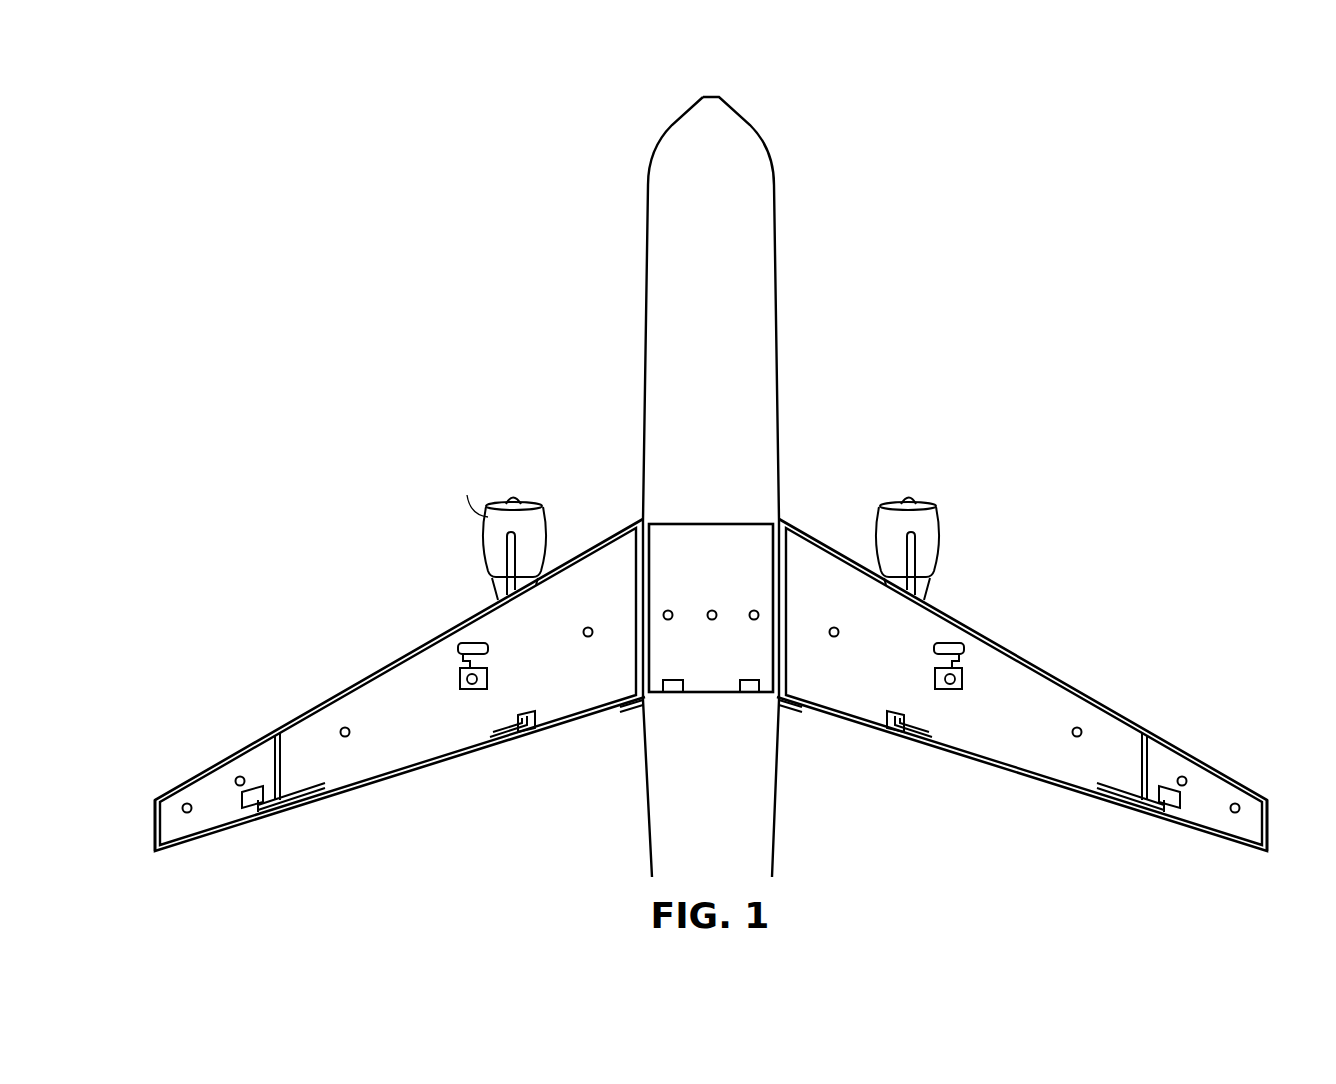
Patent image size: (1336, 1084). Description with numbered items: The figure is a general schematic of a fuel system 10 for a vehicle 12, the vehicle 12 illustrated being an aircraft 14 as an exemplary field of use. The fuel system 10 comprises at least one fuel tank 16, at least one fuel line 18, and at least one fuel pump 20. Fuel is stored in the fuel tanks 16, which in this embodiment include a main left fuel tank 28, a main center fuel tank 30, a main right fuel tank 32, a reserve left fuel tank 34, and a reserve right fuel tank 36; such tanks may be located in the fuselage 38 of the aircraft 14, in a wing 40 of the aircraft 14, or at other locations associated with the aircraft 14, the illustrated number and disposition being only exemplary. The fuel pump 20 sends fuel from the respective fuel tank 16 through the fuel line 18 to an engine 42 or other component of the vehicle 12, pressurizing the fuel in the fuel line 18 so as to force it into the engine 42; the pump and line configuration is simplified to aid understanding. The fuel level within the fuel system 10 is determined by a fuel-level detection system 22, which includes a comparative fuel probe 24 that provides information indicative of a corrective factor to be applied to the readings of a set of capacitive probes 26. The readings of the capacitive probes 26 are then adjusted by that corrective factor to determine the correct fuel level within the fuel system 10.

The fuel system 10 is at (448, 599).
The vehicle 12 is at (216, 171).
The aircraft 14 is at (376, 249).
The fuel tank 16 is at (670, 537).
The fuel line 18 is at (284, 800).
The fuel pump 20 is at (240, 810).
The fuel-level detection system 22 is at (1042, 702).
The comparative fuel probe 24 is at (488, 679).
The capacitive probes 26 is at (189, 803).
The main left fuel tank 28 is at (400, 662).
The main center fuel tank 30 is at (717, 524).
The main right fuel tank 32 is at (803, 537).
The reserve left fuel tank 34 is at (170, 795).
The reserve right fuel tank 36 is at (1268, 800).
The fuselage 38 is at (778, 263).
The wing 40 is at (214, 630).
The engine 42 is at (942, 515).